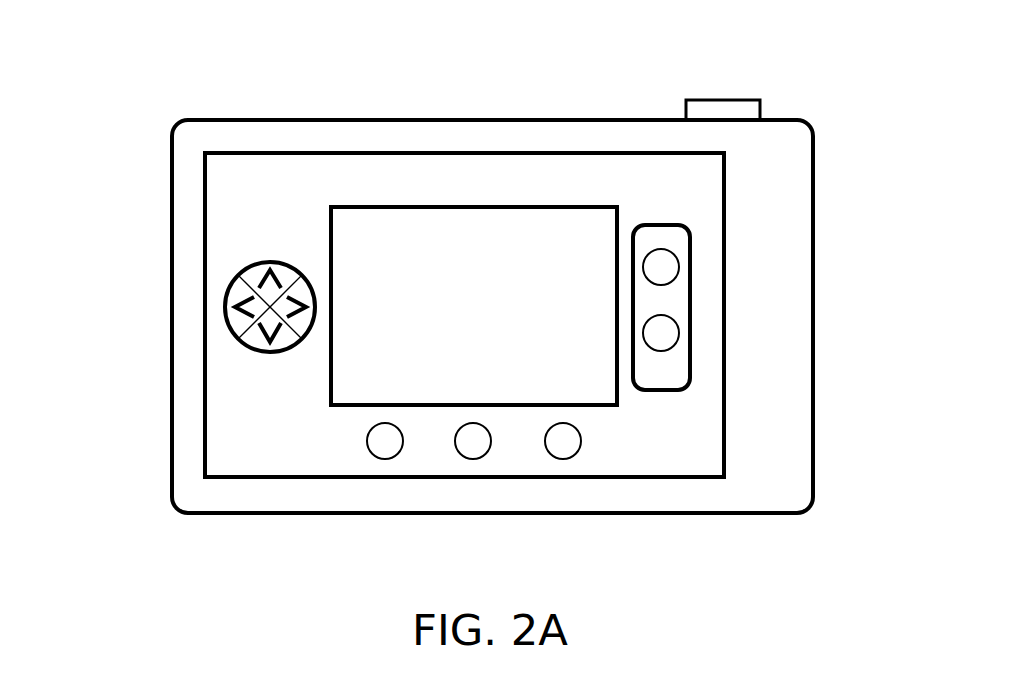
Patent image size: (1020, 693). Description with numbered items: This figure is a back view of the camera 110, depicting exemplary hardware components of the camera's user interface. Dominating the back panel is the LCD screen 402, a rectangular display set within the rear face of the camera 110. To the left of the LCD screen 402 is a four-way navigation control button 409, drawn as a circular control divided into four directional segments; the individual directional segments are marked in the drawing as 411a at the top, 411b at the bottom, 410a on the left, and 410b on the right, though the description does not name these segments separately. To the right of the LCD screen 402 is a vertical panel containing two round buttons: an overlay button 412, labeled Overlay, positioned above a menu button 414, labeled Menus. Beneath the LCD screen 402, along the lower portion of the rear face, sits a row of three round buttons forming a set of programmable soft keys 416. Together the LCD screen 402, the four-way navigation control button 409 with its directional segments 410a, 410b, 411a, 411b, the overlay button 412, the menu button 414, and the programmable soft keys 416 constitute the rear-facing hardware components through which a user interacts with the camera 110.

The camera 110 is at (636, 45).
The LCD screen 402 is at (510, 207).
The four-way navigation control button 409 is at (179, 272).
The left arrow key 410a is at (225, 295).
The right arrow key 410b is at (256, 326).
The up arrow key 411a is at (260, 262).
The down arrow key 411b is at (263, 353).
The overlay button 412 is at (670, 250).
The menu button 414 is at (668, 318).
The programmable soft keys 416 is at (563, 460).